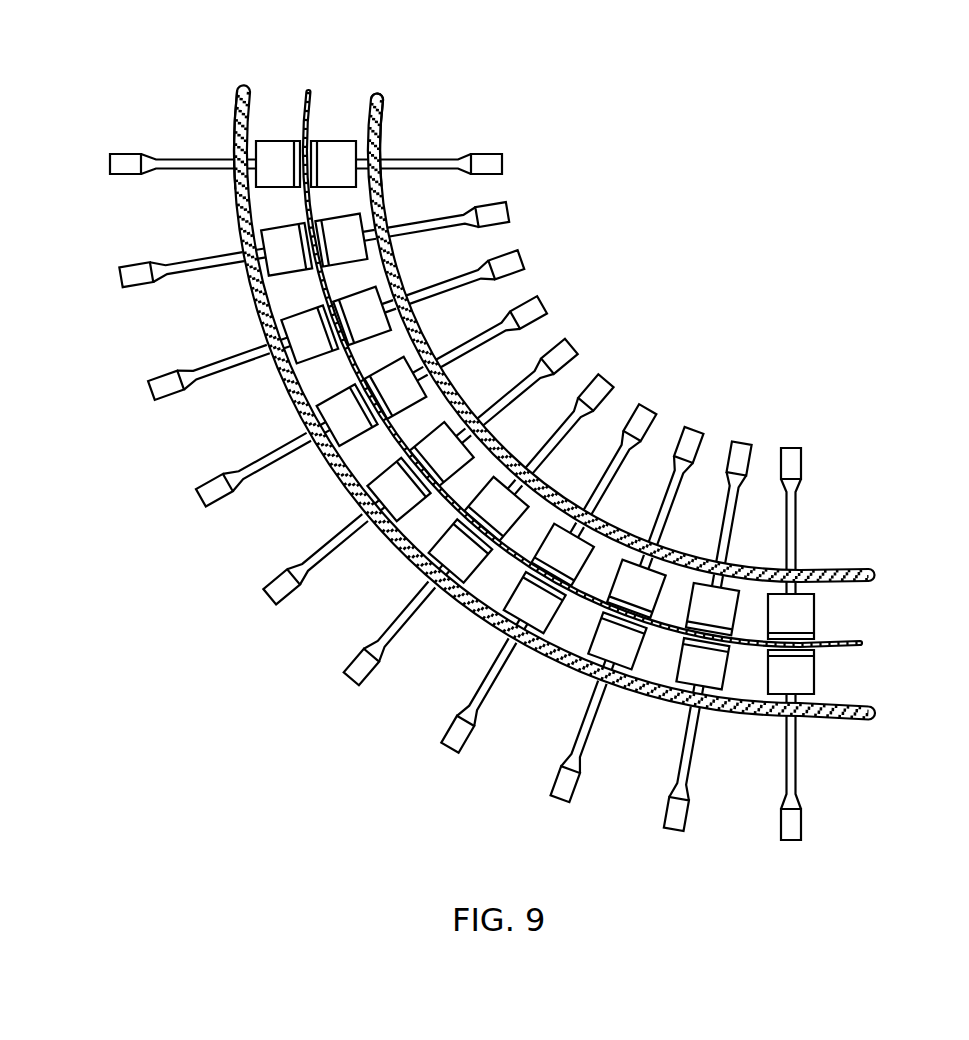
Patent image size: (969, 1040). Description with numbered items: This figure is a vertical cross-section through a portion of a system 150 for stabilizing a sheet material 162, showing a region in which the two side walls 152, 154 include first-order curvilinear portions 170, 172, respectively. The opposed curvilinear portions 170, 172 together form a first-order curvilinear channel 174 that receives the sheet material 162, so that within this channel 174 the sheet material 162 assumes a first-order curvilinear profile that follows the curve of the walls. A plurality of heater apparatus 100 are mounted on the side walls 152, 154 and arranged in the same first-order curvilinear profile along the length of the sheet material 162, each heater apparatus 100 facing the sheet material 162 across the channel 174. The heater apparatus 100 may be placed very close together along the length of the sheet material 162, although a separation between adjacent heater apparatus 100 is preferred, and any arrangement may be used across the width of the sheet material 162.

The heater apparatus 100 is at (198, 172).
The system 150 is at (253, 295).
The side wall 152 is at (238, 83).
The side wall 154 is at (378, 102).
The sheet material 162 is at (307, 88).
The first-order curvilinear portion 170 is at (237, 128).
The first-order curvilinear portion 172 is at (377, 148).
The first-order curvilinear channel 174 is at (370, 98).